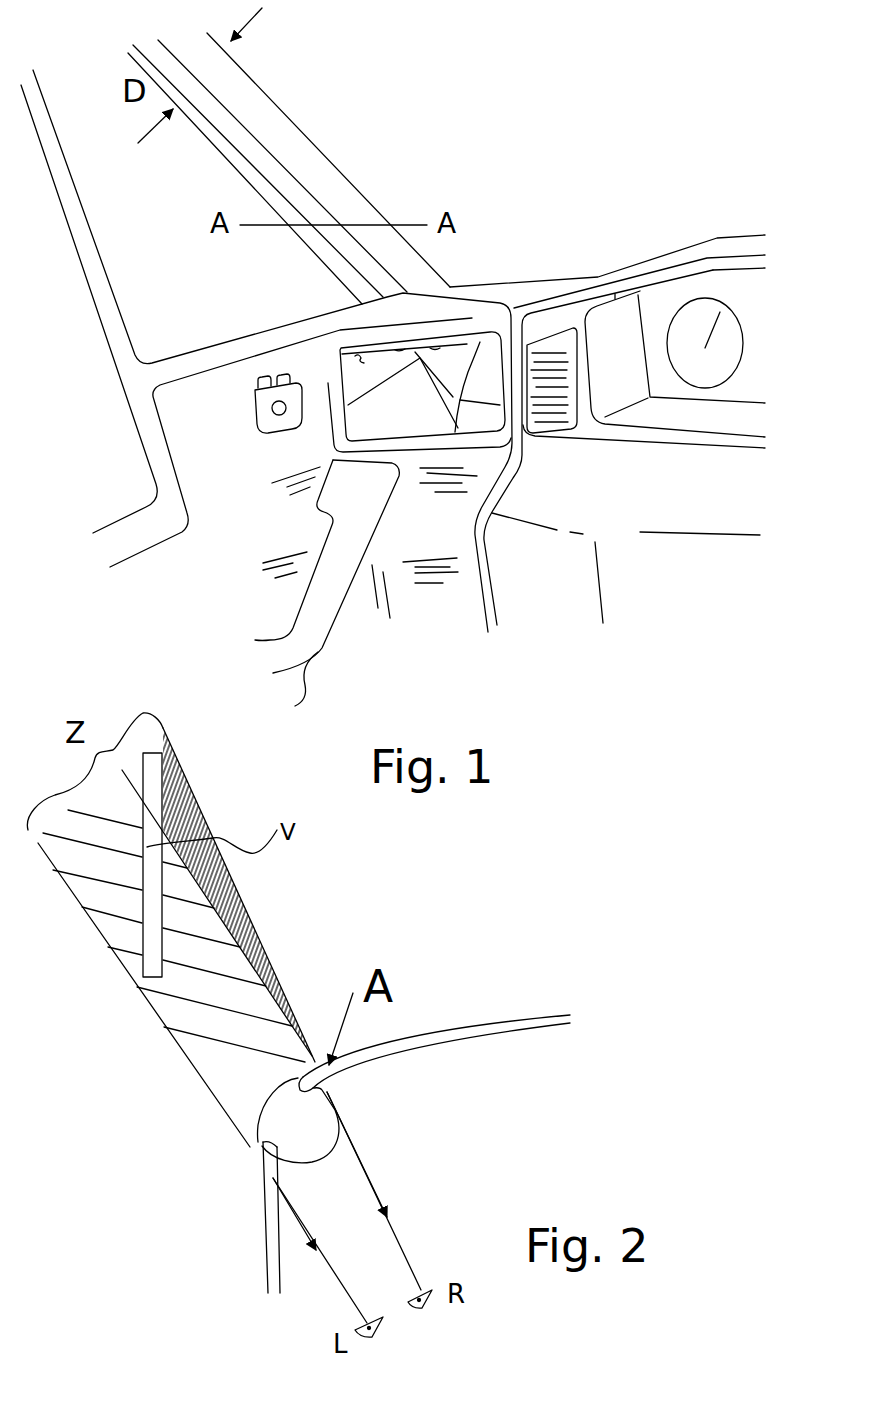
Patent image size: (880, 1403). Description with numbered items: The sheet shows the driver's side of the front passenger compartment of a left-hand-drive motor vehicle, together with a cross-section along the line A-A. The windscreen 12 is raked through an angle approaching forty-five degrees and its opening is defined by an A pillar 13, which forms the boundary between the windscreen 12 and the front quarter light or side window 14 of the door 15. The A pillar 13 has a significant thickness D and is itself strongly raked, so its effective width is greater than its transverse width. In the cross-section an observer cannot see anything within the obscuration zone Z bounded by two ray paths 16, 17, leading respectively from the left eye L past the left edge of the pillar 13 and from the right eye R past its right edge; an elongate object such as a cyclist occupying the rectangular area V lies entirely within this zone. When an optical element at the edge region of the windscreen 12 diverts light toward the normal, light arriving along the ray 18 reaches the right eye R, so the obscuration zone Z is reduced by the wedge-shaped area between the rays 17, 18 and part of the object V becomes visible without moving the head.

In FIG. 1, the windscreen 12 is at (560, 213).
In FIG. 2, the windscreen 12 is at (513, 1023).
In FIG. 1, the A pillar 13 is at (343, 193).
In FIG. 2, the A pillar 13 is at (318, 1142).
In FIG. 1, the side window 14 is at (197, 177).
In FIG. 2, the side window 14 is at (267, 1238).
In FIG. 1, the door 15 is at (165, 587).
In FIG. 2, the ray path 16 is at (214, 1100).
In FIG. 2, the ray path 17 is at (228, 868).
In FIG. 2, the ray 18 is at (260, 942).